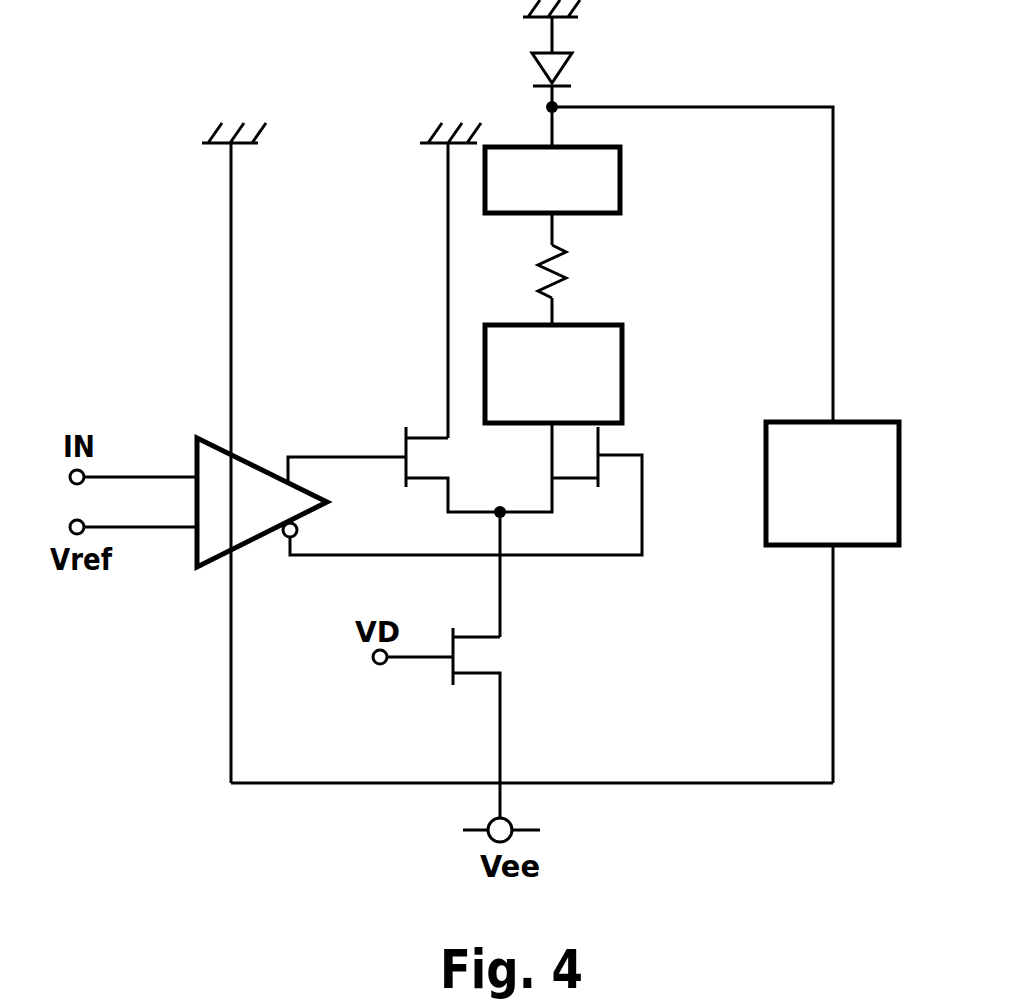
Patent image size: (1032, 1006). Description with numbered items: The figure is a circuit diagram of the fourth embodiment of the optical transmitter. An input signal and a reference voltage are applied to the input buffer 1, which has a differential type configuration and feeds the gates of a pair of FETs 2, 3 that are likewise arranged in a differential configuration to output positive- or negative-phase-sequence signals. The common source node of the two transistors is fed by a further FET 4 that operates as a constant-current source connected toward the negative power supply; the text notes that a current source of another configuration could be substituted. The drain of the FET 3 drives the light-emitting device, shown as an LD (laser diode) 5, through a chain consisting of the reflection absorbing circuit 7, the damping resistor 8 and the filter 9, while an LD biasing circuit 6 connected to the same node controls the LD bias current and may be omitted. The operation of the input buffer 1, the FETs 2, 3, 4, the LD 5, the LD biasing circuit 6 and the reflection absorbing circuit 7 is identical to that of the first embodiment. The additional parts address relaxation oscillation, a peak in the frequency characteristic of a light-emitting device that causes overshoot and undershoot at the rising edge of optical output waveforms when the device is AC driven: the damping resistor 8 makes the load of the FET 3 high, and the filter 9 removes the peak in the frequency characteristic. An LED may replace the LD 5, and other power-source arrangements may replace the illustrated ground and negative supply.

The input buffer 1 is at (196, 455).
The FET 2 is at (404, 445).
The FET 3 is at (602, 432).
The FET 4 is at (508, 655).
The LD (laser diode) 5 is at (538, 70).
The LD biasing circuit 6 is at (766, 494).
The reflection absorbing circuit 7 is at (624, 375).
The damping resistor 8 is at (575, 296).
The filter 9 is at (622, 175).